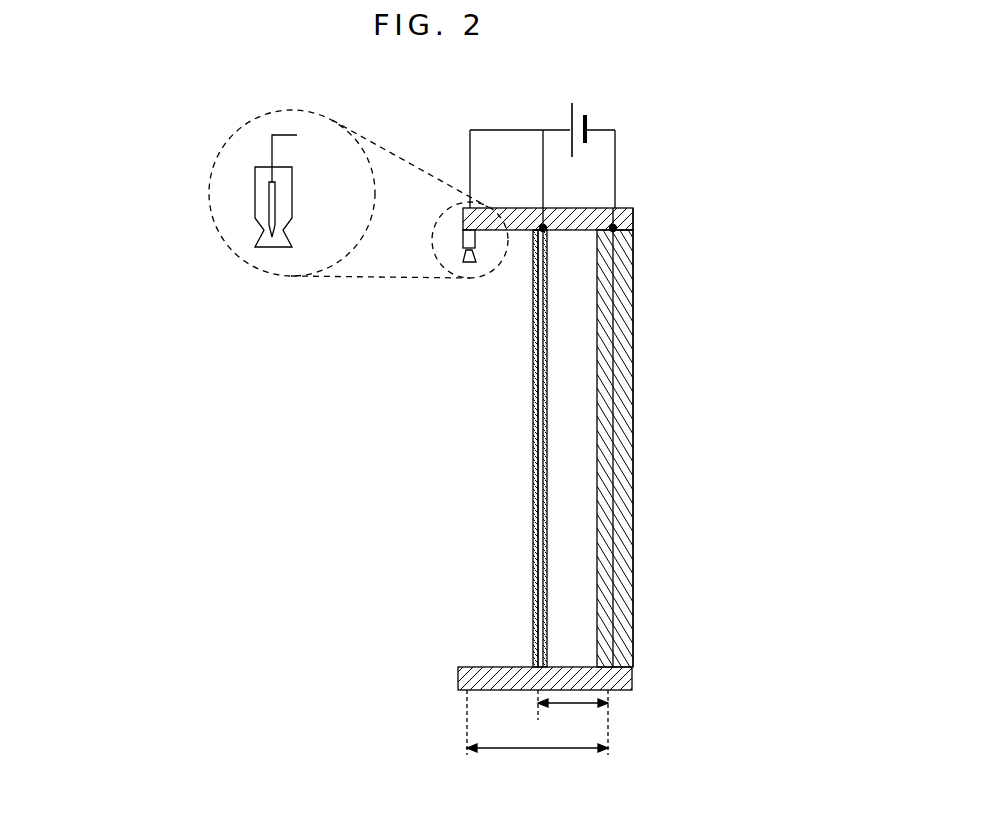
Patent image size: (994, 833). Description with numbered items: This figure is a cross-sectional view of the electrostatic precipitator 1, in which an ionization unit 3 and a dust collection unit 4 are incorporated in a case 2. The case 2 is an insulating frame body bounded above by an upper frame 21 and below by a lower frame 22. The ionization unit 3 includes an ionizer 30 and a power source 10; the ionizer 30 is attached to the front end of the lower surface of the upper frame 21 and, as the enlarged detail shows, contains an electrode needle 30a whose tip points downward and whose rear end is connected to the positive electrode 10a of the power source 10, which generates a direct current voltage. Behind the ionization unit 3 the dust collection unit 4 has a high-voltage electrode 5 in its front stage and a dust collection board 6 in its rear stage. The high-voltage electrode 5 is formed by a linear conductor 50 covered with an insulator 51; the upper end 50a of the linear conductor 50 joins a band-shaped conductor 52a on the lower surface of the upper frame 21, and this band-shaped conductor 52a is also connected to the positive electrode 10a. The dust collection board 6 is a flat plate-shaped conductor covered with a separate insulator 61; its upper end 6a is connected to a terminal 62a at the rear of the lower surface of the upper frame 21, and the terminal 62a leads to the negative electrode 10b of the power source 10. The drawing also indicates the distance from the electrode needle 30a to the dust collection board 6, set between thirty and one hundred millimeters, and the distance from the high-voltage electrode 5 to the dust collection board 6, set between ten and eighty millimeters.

The electrostatic precipitator 1 is at (660, 89).
The case 2 is at (634, 210).
The upper frame 21 is at (636, 223).
The lower frame 22 is at (634, 683).
The ionization unit 3 is at (449, 265).
The ionizer 30 is at (255, 182).
The electrode needle 30a is at (255, 235).
The dust collection unit 4 is at (355, 436).
The high-voltage electrode 5 is at (425, 400).
The linear conductor 50 is at (533, 492).
The upper end 50a is at (541, 235).
The insulator 51 is at (533, 422).
The band-shaped conductor 52a is at (533, 233).
The dust collection board 6 is at (630, 622).
The upper end 6a is at (634, 293).
The insulator 61 is at (605, 579).
The terminal 62a is at (636, 230).
The power source 10 is at (576, 103).
The positive electrode 10a is at (543, 130).
The negative electrode 10b is at (618, 157).